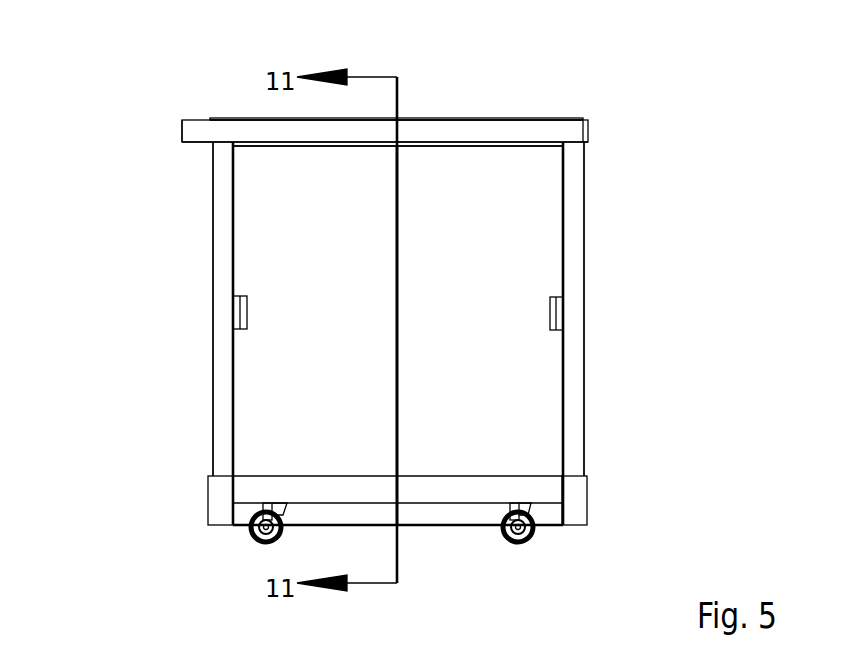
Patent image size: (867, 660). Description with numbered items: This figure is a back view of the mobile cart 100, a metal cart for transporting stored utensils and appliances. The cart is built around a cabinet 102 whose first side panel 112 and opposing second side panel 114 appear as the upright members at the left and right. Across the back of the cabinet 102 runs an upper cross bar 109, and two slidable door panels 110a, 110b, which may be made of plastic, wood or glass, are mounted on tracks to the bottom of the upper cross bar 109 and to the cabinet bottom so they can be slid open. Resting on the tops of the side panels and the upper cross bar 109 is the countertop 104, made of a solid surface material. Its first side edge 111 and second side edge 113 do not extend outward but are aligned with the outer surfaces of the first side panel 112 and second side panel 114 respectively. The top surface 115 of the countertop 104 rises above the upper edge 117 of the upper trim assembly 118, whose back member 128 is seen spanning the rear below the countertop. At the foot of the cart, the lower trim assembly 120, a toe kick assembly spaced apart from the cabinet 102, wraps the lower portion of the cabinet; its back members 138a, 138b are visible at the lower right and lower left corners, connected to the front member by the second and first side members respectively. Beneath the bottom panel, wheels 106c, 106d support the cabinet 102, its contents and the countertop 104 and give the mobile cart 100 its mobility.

The mobile cart 100 is at (655, 70).
The cabinet 102 is at (605, 186).
The countertop 104 is at (436, 100).
The wheel 106c is at (520, 540).
The wheel 106d is at (265, 548).
The upper cross bar 109 is at (303, 147).
The door panel 110a is at (507, 270).
The door panel 110b is at (277, 253).
The first side edge 111 is at (208, 118).
The first side panel 112 is at (213, 383).
The second side edge 113 is at (590, 120).
The second side panel 114 is at (587, 368).
The top surface 115 is at (262, 118).
The upper edge 117 is at (196, 120).
The upper trim assembly 118 is at (182, 155).
The lower trim assembly 120 is at (608, 496).
The back member 128 is at (456, 130).
The back member 138a is at (577, 512).
The back member 138b is at (220, 510).